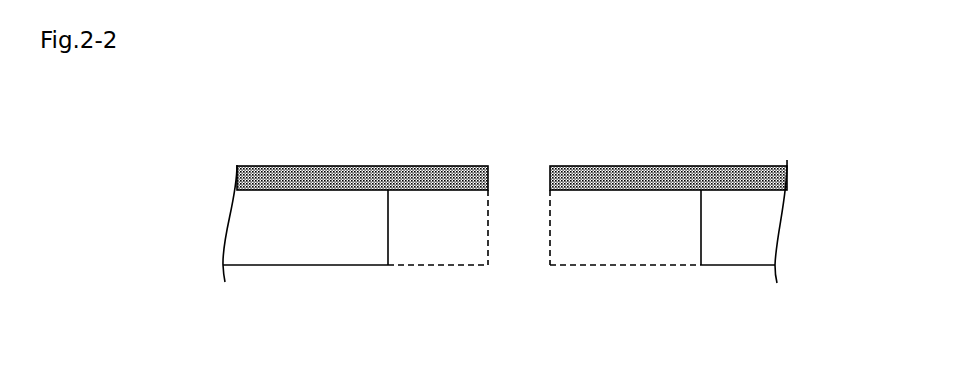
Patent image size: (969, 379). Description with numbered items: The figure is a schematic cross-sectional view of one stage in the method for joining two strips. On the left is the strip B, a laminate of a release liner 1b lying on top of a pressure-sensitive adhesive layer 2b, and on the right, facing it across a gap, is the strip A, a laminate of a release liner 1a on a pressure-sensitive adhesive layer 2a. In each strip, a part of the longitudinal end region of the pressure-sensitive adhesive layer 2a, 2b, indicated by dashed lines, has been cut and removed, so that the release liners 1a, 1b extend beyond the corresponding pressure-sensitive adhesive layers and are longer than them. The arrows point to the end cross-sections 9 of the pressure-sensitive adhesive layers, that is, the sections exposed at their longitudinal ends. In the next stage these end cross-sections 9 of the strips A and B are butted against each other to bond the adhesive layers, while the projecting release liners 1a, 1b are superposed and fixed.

The release liner 1a is at (755, 172).
The release liner 1b is at (238, 164).
The pressure-sensitive adhesive layer 2a is at (757, 238).
The pressure-sensitive adhesive layer 2b is at (260, 240).
The end cross-section 9 is at (701, 218).
The strip A is at (850, 122).
The strip B is at (158, 113).